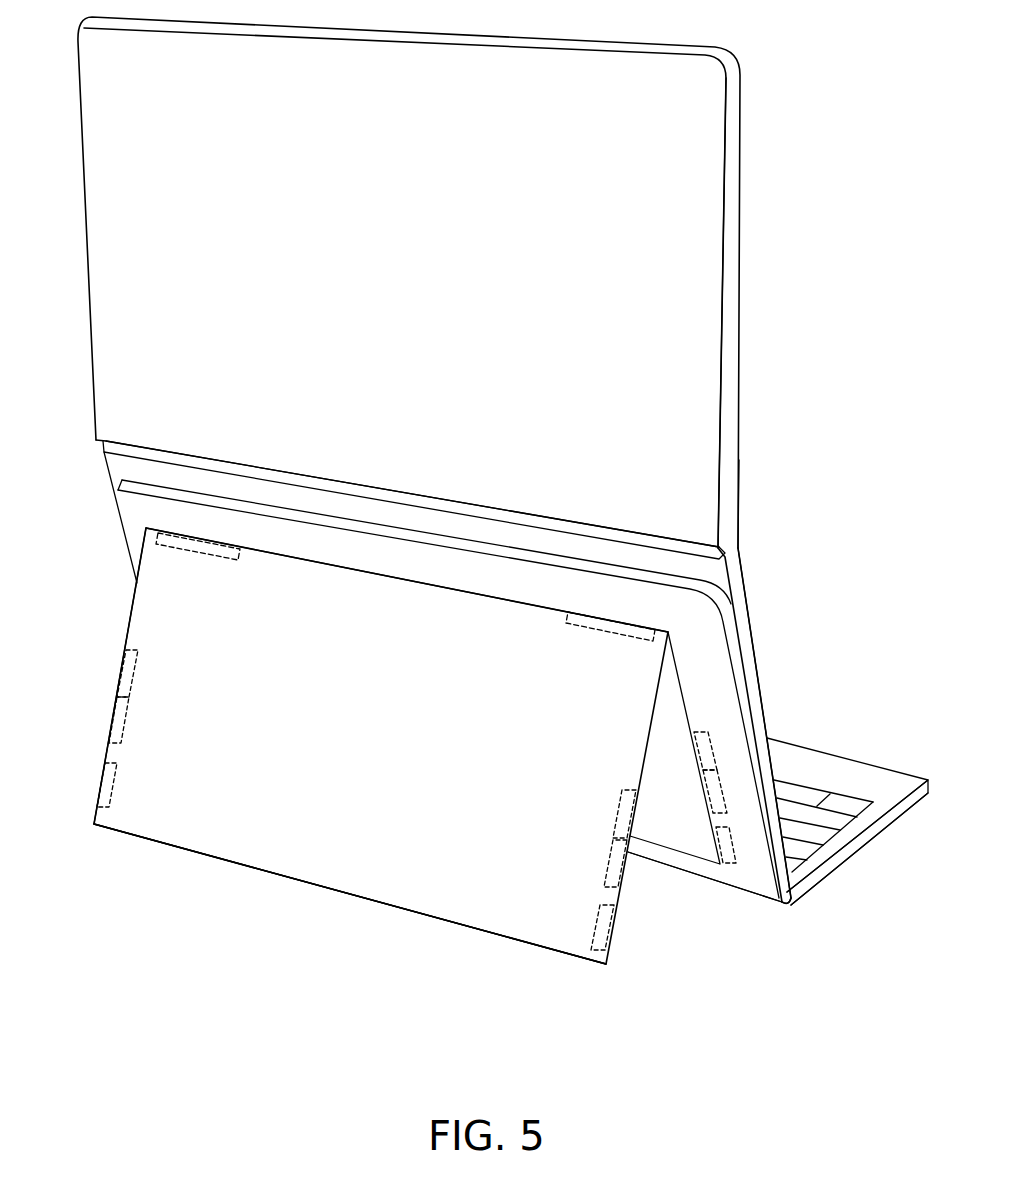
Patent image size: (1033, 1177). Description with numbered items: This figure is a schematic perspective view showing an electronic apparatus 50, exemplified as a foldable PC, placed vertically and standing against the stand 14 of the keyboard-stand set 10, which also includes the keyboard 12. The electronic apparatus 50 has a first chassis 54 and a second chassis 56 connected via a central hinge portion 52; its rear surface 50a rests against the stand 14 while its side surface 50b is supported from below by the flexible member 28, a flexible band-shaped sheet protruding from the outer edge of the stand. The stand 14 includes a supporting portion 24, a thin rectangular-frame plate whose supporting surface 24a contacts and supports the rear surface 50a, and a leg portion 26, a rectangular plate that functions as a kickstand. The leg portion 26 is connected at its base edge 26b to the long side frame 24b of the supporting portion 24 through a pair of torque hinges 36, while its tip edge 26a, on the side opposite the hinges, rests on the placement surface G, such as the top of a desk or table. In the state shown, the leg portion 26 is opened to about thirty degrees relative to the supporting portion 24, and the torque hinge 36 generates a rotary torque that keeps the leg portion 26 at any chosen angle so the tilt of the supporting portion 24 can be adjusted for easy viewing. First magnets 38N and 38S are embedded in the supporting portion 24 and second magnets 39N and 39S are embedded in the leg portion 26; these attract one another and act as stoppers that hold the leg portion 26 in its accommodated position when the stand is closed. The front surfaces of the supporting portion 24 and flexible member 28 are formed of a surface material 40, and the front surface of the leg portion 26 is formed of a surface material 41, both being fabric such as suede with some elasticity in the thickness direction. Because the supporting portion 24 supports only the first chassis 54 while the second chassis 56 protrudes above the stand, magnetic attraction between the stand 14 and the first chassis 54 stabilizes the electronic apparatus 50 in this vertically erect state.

The keyboard-stand set 10 is at (840, 973).
The keyboard 12 is at (862, 876).
The stand 14 is at (696, 958).
The supporting portion 24 is at (437, 669).
The supporting surface 24a is at (788, 846).
The long side frame 24b is at (455, 572).
The leg portion 26 is at (320, 855).
The tip edge 26a is at (415, 918).
The base edge 26b is at (378, 577).
The flexible member 28 is at (791, 905).
The torque hinge 36 is at (195, 548).
The first magnet 38N is at (713, 748).
The first magnet 38S is at (735, 843).
The second magnet 39N is at (118, 672).
The second magnet 39S is at (95, 775).
The surface material 40 is at (713, 668).
The surface material 41 is at (193, 822).
The electronic apparatus 50 is at (798, 60).
The rear surface 50a is at (706, 573).
The side surface 50b is at (786, 900).
The hinge portion 52 is at (582, 525).
The first chassis 54 is at (752, 608).
The second chassis 56 is at (708, 262).
The placement surface G is at (655, 923).